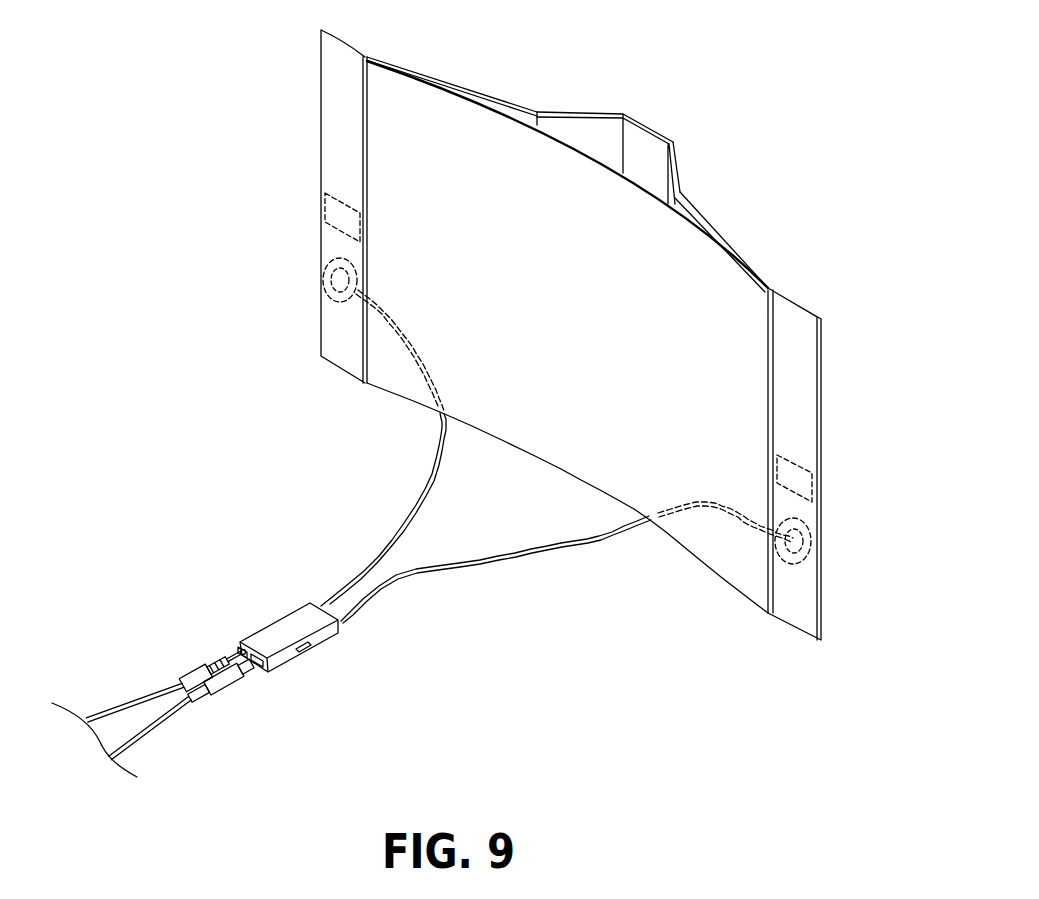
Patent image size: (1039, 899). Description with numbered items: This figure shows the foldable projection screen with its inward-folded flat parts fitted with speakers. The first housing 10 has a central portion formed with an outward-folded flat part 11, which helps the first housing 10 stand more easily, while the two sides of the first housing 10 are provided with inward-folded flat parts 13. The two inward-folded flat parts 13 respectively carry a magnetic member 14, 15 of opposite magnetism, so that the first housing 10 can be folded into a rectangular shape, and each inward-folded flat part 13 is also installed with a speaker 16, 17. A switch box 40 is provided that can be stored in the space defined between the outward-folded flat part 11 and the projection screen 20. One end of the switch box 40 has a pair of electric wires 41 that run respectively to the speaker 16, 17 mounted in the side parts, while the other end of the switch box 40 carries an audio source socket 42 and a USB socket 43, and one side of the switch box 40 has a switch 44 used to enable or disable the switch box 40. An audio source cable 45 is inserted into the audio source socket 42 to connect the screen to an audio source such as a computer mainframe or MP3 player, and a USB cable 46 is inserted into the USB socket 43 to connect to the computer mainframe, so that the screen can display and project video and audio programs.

The first housing 10 is at (702, 210).
The outward-folded flat part 11 is at (652, 128).
The inward-folded flat part 13 is at (337, 100).
The magnetic member 14 is at (333, 212).
The magnetic member 15 is at (812, 488).
The speaker 16 is at (325, 262).
The speaker 17 is at (812, 538).
The projection screen 20 is at (578, 177).
The switch box 40 is at (293, 622).
The electric wires 41 is at (423, 498).
The audio source socket 42 is at (240, 650).
The USB socket 43 is at (260, 670).
The switch 44 is at (307, 648).
The audio source cable 45 is at (150, 697).
The USB cable 46 is at (170, 720).